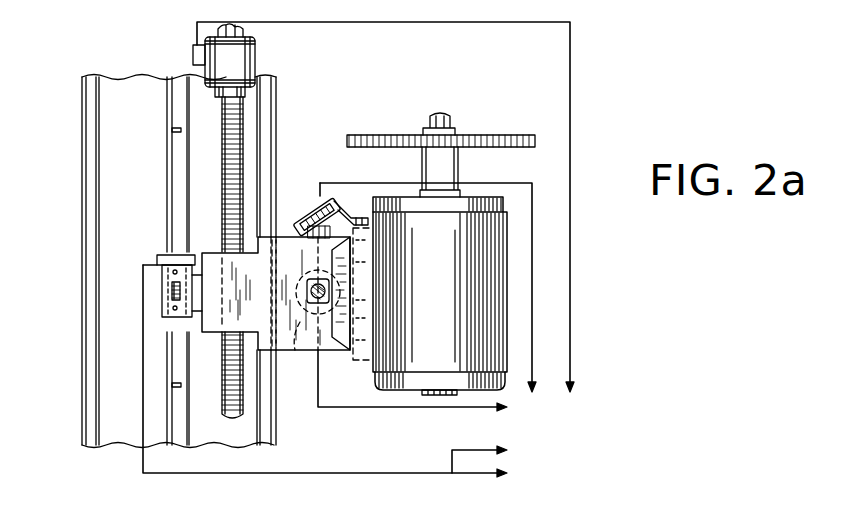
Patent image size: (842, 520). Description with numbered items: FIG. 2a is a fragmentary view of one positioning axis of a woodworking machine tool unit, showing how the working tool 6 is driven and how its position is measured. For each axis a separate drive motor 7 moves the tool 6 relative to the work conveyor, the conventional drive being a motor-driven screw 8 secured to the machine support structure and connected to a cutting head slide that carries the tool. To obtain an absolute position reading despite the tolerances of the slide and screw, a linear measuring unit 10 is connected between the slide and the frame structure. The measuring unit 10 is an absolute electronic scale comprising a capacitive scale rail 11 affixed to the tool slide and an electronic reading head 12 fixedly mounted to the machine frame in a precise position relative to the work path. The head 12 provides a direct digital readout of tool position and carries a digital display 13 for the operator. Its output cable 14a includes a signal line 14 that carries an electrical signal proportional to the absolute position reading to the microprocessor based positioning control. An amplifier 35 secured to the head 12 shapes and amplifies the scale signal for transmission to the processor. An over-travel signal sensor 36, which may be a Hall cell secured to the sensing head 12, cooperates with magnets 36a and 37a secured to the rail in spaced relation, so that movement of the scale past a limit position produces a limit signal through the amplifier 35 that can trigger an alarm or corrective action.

The working tool 6 is at (533, 135).
The drive motor 7 is at (258, 58).
The motor-driven screw 8 is at (240, 135).
The linear measuring unit 10 is at (161, 294).
The capacitive scale rail 11 is at (177, 192).
The electronic reading head 12 is at (317, 190).
The digital display 13 is at (170, 285).
The signal line 14 is at (484, 470).
The output cable 14a is at (145, 370).
The amplifier 35 is at (306, 239).
The over-travel signal sensor 36 is at (341, 241).
The magnet 36a is at (172, 134).
The magnet 37a is at (176, 387).